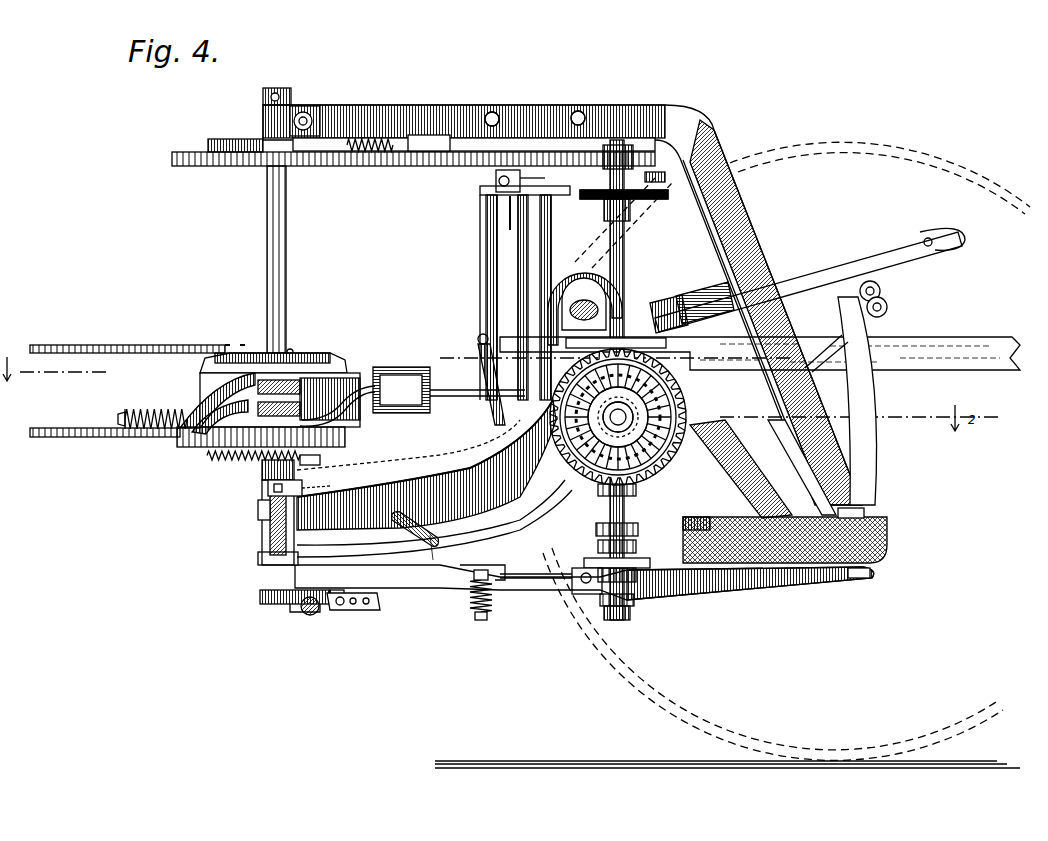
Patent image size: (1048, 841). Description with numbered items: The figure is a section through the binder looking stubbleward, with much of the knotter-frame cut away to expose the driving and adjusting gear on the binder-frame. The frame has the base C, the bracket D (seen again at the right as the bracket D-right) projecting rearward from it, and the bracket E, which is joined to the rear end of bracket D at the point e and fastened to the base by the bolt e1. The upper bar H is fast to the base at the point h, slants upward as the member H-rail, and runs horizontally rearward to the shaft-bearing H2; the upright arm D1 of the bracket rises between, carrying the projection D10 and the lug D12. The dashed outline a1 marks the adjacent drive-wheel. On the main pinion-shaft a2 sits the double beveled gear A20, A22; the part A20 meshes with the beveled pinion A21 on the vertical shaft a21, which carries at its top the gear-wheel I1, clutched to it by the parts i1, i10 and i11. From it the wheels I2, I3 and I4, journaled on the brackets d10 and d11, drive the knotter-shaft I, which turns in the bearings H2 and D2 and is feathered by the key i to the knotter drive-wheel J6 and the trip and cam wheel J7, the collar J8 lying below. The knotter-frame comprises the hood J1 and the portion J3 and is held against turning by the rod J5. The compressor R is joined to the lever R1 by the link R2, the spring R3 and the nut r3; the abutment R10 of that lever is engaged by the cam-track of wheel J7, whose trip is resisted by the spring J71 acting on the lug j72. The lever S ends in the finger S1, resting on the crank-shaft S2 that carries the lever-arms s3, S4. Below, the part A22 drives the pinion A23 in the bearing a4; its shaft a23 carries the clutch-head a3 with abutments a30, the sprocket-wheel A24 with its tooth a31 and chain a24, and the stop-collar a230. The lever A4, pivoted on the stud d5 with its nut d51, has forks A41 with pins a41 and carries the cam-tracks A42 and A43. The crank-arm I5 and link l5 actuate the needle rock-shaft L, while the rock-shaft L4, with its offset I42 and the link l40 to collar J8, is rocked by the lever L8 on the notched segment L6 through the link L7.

The upper bar H is at (400, 105).
The shaft-bearing H2 is at (265, 113).
The bracket d11 is at (462, 112).
The bracket d10 is at (558, 112).
The gear-wheel I1 is at (680, 112).
The wheel I4 is at (325, 166).
The wheel I3 is at (418, 152).
The wheel I2 is at (496, 176).
The crank-shaft S2 is at (492, 196).
The lever-arm S4 is at (512, 205).
The lever-arm s3 is at (486, 250).
The shaft a21 is at (625, 250).
The lug D12 is at (580, 197).
The collar i11 is at (656, 196).
The dotted line i10 is at (668, 212).
The dotted line i1 is at (648, 222).
The upright arm D1 is at (520, 252).
The notched segment L6 is at (576, 273).
The projection D10 is at (584, 304).
The upper bar H-rail is at (756, 252).
The beveled pinion A21 is at (632, 404).
The main driving pinion-shaft a2 is at (588, 400).
The beveled gear part A20 is at (690, 406).
The beveled gear part A22 is at (665, 424).
The pinion A23 is at (636, 500).
The bearing a4 is at (596, 530).
The clutch-head a3 is at (598, 547).
The abutments a30 is at (584, 563).
The tooth a31 is at (640, 553).
The forks A41 is at (592, 595).
The chain a24 is at (574, 578).
The shaft a23 is at (600, 580).
The pins a41 is at (580, 600).
The stop-collar a230 is at (620, 608).
The sprocket-wheel A24 is at (645, 598).
The bracket E is at (264, 570).
The junction point e is at (258, 556).
The bolt e1 is at (862, 577).
The base C is at (812, 578).
The fastening point h is at (866, 520).
The shaft-bearing D2 is at (292, 505).
The crank-arm I5 is at (262, 592).
The link l5 is at (315, 613).
The cam-track A43 is at (338, 604).
The cam-track A42 is at (375, 610).
The offset portion I42 is at (432, 548).
The stud d5 is at (470, 588).
The stop-nut d51 is at (478, 620).
The lever A4 is at (500, 582).
The bracket D is at (478, 500).
The needle rock-shaft L is at (430, 496).
The rock-shaft L4 is at (394, 534).
The rod J5 is at (492, 470).
The knotter-driving shaft I is at (287, 205).
The key i is at (291, 350).
The knotter drive-wheel J6 is at (333, 356).
The hood J1 is at (410, 368).
The link R2 is at (178, 432).
The knotter-frame portion J3 is at (215, 380).
The compressor R is at (205, 405).
The nut r3 is at (112, 414).
The spring R3 is at (146, 430).
The trip and cam wheel J7 is at (300, 466).
The lug j72 is at (322, 460).
The spring J71 is at (240, 462).
The collar J8 is at (268, 488).
The link l40 is at (316, 486).
The lever S is at (390, 414).
The finger S1 is at (484, 398).
The lever R1 is at (345, 424).
The abutment R10 is at (364, 420).
The link L7 is at (477, 342).
The lever L8 is at (818, 282).
The bracket D-right is at (760, 492).
The wheel outline a1 is at (645, 697).